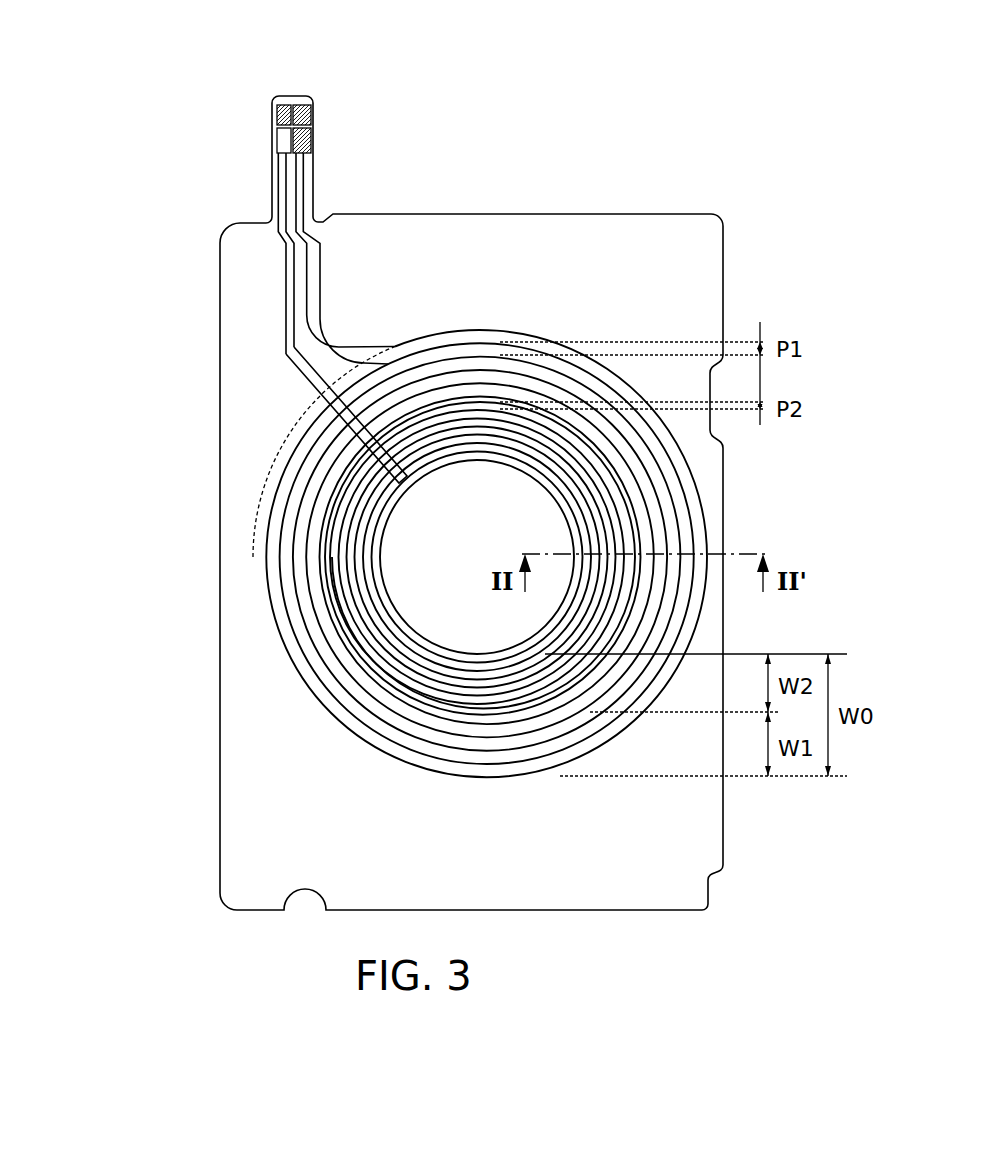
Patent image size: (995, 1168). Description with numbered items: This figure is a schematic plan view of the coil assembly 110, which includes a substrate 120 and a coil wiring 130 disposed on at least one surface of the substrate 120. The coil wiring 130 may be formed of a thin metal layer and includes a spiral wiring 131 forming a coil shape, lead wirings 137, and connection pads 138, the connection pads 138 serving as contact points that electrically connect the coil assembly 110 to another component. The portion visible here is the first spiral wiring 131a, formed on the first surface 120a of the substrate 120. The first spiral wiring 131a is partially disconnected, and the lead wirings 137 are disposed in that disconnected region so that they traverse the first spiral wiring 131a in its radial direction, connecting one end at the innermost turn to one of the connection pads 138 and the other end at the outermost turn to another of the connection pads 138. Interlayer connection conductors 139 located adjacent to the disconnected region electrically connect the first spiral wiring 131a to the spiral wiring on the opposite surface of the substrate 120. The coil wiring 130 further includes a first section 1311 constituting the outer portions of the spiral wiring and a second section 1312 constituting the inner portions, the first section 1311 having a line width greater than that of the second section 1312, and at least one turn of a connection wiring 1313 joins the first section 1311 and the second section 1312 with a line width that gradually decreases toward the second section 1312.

The coil assembly 110 is at (493, 34).
The substrate 120 is at (729, 261).
The first surface 120a is at (597, 216).
The coil wiring 130 is at (420, 326).
The spiral wiring 131 is at (404, 553).
The first spiral wiring 131a is at (100, 703).
The first section 1311 is at (262, 565).
The second section 1312 is at (326, 593).
The connection wiring 1313 is at (346, 655).
The lead wirings 137 is at (287, 298).
The connection pads 138 is at (283, 145).
The interlayer connection conductors 139 is at (318, 470).